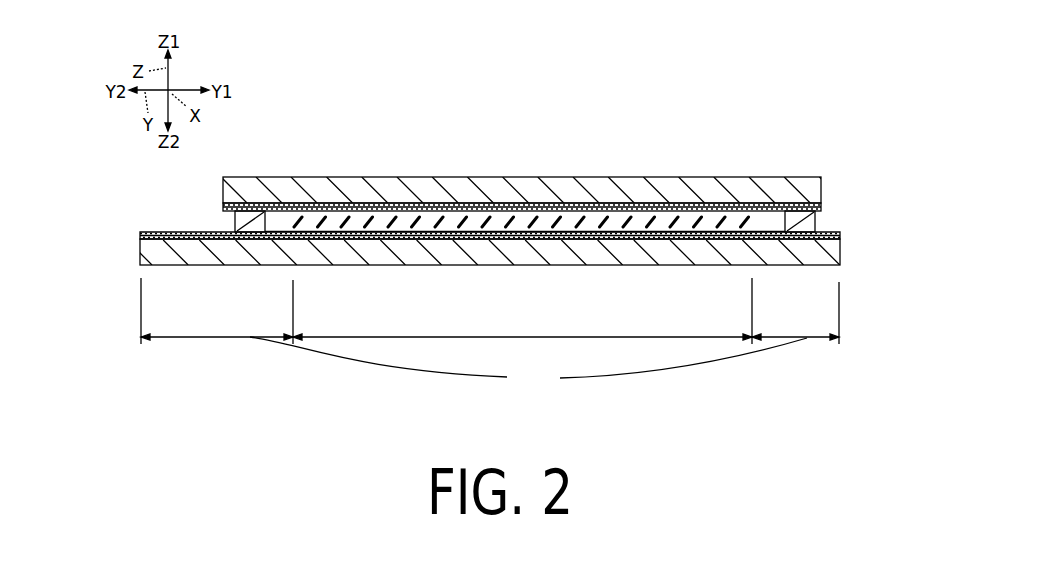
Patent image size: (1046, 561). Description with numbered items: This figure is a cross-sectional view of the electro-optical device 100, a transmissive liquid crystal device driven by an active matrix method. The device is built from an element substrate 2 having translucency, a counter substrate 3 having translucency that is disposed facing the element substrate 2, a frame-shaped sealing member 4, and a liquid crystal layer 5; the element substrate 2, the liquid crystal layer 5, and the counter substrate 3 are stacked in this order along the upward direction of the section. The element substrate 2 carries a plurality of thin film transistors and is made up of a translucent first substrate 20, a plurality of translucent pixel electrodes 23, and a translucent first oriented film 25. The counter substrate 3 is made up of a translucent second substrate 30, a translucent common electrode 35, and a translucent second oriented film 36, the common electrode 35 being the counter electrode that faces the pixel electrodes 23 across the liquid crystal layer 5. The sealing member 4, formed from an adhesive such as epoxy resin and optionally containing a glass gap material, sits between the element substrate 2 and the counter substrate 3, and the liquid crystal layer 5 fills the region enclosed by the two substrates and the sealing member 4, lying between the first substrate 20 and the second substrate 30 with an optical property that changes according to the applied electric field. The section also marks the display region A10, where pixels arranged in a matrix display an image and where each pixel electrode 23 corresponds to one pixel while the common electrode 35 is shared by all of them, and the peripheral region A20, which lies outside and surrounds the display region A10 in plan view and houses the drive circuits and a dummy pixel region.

The electro-optical device 100 is at (831, 131).
The element substrate 2 is at (845, 278).
The counter substrate 3 is at (786, 175).
The sealing member 4 is at (797, 222).
The liquid crystal layer 5 is at (767, 228).
The first substrate 20 is at (389, 259).
The pixel electrodes 23 is at (445, 240).
The first oriented film 25 is at (788, 245).
The second substrate 30 is at (288, 184).
The common electrode 35 is at (398, 208).
The second oriented film 36 is at (445, 220).
The display region A10 is at (490, 321).
The peripheral region A20 is at (528, 364).